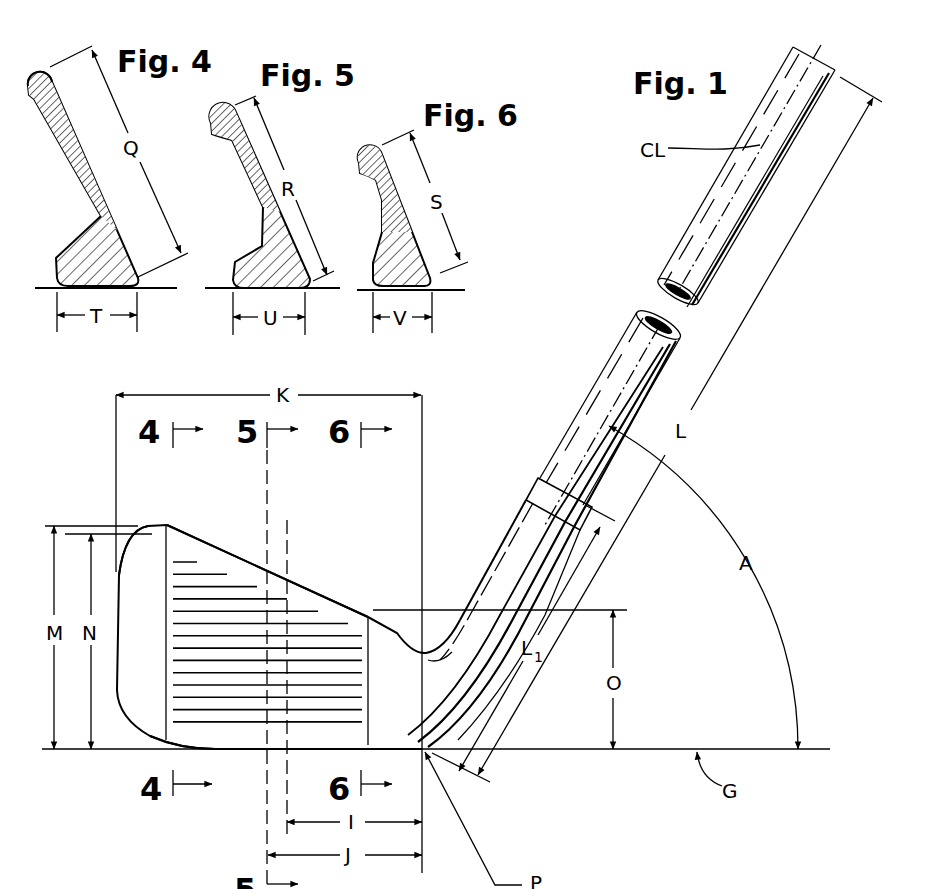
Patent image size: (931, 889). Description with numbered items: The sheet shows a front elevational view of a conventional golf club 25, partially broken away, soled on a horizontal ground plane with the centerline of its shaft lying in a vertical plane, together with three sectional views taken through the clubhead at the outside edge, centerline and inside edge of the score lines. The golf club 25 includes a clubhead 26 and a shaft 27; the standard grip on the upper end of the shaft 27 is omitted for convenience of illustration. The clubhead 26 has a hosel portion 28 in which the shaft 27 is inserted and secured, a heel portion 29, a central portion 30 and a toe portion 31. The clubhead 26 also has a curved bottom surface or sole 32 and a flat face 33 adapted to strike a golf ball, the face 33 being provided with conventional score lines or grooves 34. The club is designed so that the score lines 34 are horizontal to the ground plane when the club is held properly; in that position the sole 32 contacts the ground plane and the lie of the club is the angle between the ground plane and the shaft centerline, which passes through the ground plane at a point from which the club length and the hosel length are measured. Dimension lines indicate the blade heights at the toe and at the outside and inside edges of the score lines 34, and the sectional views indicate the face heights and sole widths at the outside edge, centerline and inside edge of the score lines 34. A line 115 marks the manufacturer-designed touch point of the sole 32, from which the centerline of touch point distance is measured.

In FIG. 1, the golf club 25 is at (489, 546).
In FIG. 4, the clubhead 26 is at (62, 138).
In FIG. 5, the clubhead 26 is at (250, 178).
In FIG. 6, the clubhead 26 is at (388, 217).
In FIG. 1, the clubhead 26 is at (145, 717).
In FIG. 1, the shaft 27 is at (690, 217).
In FIG. 1, the hosel portion 28 is at (528, 497).
In FIG. 1, the heel portion 29 is at (393, 650).
In FIG. 1, the central portion 30 is at (228, 562).
In FIG. 1, the toe portion 31 is at (148, 527).
In FIG. 1, the sole 32 is at (240, 752).
In FIG. 4, the face 33 is at (60, 118).
In FIG. 1, the face 33 is at (330, 608).
In FIG. 1, the score lines 34 is at (350, 680).
In FIG. 1, the touch point line 115 is at (287, 540).